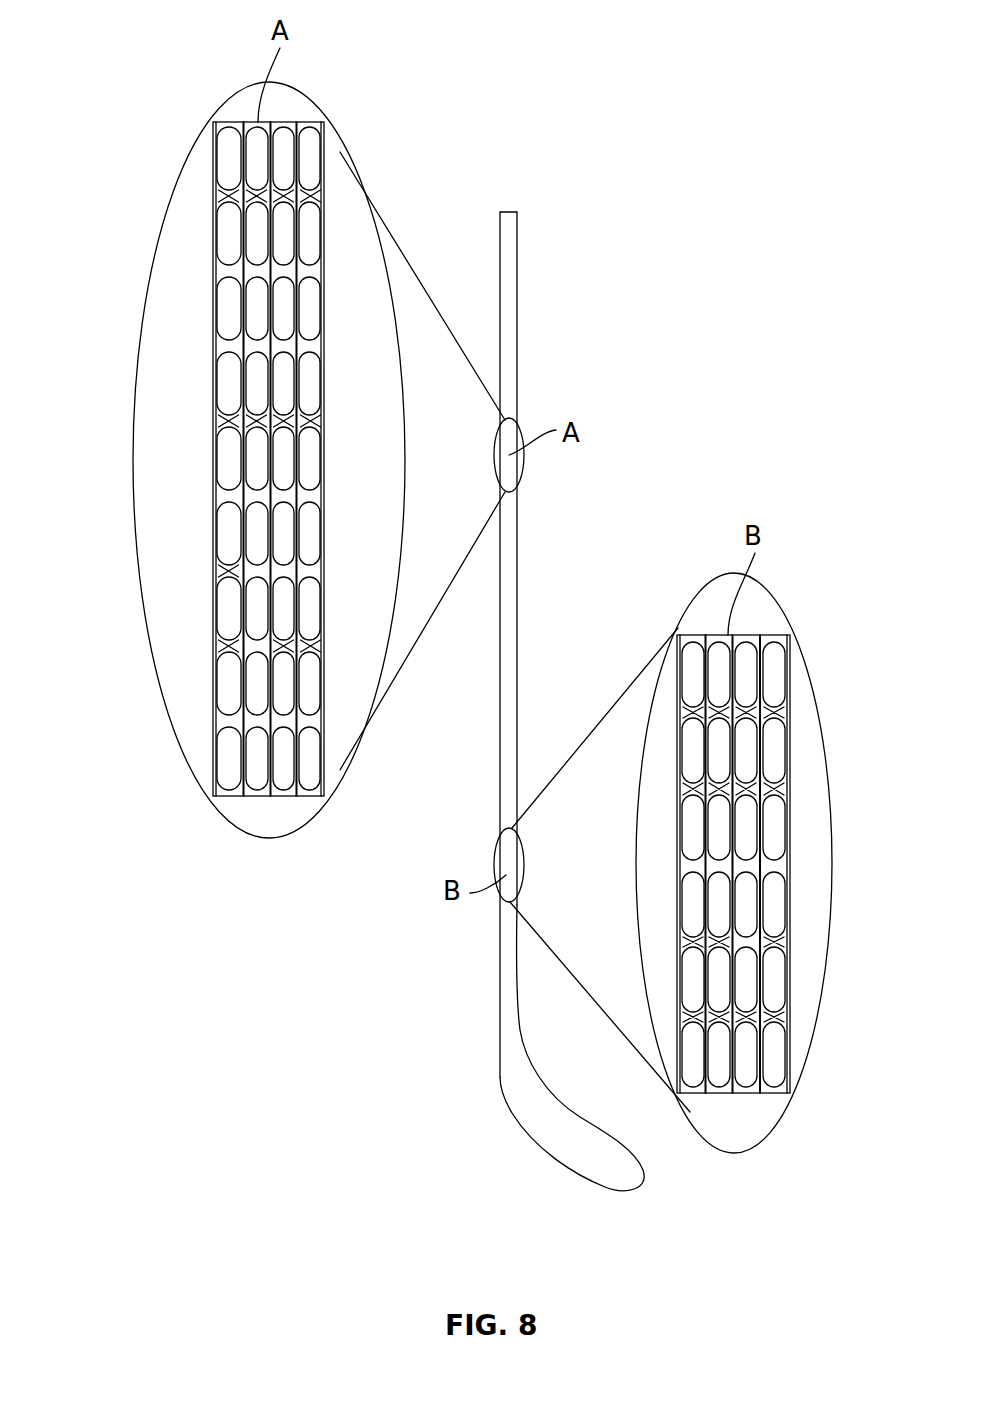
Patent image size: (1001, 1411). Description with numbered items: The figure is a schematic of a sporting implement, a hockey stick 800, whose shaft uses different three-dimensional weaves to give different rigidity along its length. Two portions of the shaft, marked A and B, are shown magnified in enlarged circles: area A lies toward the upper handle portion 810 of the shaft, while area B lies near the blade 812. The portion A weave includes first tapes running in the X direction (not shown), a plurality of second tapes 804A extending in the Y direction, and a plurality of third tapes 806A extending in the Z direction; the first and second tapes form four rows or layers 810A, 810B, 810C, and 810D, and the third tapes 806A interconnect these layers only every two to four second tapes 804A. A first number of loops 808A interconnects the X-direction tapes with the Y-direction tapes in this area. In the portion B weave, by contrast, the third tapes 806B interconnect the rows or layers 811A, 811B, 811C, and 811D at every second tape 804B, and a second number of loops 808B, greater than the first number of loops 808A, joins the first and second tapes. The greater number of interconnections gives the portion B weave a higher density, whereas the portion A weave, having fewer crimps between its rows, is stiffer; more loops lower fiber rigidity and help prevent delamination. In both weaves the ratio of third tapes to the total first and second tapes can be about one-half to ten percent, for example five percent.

The hockey stick 800 is at (560, 701).
The upper handle portion 810 is at (509, 261).
The blade 812 is at (568, 1148).
The second tapes 804A is at (307, 142).
The third tapes 806A is at (297, 227).
The loops 808A is at (215, 550).
The row or layer 810A is at (227, 772).
The row or layer 810B is at (256, 772).
The row or layer 810C is at (283, 770).
The row or layer 810D is at (312, 772).
The second tapes 804B is at (695, 660).
The third tapes 806B is at (710, 745).
The loops 808B is at (775, 833).
The row or layer 811A is at (693, 1075).
The row or layer 811B is at (720, 1077).
The row or layer 811C is at (747, 1077).
The row or layer 811D is at (778, 1068).